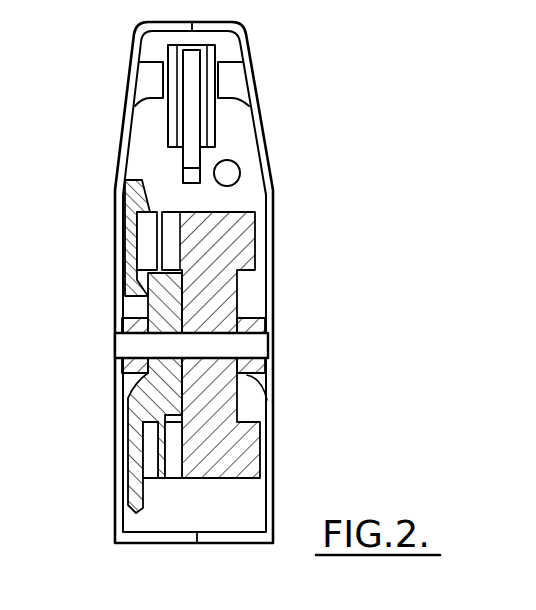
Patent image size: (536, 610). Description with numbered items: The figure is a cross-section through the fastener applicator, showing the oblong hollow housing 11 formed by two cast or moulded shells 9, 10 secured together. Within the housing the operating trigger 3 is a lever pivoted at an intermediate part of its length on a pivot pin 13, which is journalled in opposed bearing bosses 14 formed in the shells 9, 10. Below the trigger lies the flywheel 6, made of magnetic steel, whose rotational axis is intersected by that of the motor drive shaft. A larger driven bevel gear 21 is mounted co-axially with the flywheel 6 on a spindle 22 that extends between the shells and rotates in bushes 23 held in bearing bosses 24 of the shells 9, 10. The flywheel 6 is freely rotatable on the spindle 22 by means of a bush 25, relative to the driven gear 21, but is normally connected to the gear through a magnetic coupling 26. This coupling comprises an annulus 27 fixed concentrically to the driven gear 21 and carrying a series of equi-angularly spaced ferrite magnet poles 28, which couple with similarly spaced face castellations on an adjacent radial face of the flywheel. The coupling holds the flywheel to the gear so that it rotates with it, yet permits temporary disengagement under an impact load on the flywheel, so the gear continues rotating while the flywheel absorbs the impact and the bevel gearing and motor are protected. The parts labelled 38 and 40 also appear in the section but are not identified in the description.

The operating trigger 3 is at (200, 46).
The pivot pin 13 is at (209, 70).
The bearing bosses 14 is at (150, 85).
The stem slot 40 is at (170, 124).
The stem bottom portion 38 is at (191, 128).
The shell 9 is at (121, 148).
The shell 10 is at (265, 147).
The driven bevel gear 21 is at (123, 198).
The ferrite magnet poles 28 is at (138, 236).
The flywheel 6 is at (228, 248).
The bearing bosses 24 is at (140, 305).
The bushes 23 is at (122, 323).
The spindle 22 is at (258, 342).
The bush 25 is at (236, 390).
The housing 11 is at (270, 437).
The annulus 27 is at (140, 445).
The magnetic coupling 26 is at (165, 483).